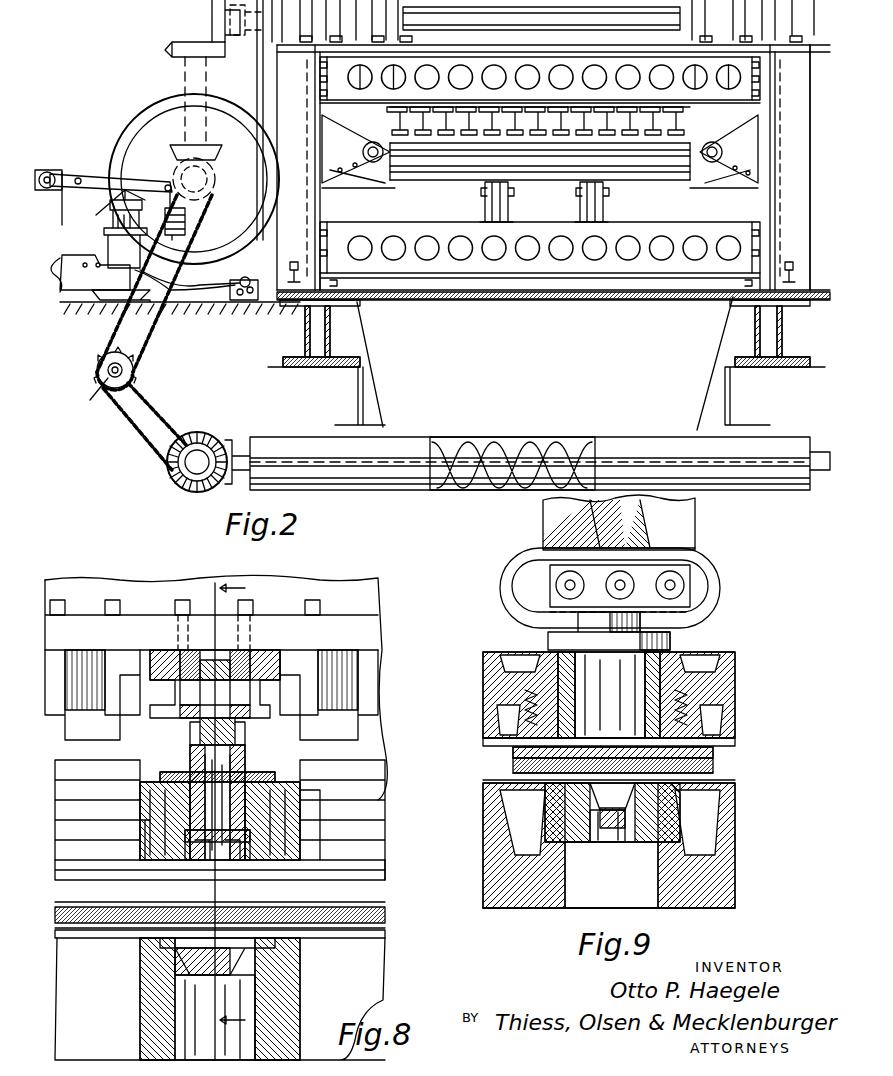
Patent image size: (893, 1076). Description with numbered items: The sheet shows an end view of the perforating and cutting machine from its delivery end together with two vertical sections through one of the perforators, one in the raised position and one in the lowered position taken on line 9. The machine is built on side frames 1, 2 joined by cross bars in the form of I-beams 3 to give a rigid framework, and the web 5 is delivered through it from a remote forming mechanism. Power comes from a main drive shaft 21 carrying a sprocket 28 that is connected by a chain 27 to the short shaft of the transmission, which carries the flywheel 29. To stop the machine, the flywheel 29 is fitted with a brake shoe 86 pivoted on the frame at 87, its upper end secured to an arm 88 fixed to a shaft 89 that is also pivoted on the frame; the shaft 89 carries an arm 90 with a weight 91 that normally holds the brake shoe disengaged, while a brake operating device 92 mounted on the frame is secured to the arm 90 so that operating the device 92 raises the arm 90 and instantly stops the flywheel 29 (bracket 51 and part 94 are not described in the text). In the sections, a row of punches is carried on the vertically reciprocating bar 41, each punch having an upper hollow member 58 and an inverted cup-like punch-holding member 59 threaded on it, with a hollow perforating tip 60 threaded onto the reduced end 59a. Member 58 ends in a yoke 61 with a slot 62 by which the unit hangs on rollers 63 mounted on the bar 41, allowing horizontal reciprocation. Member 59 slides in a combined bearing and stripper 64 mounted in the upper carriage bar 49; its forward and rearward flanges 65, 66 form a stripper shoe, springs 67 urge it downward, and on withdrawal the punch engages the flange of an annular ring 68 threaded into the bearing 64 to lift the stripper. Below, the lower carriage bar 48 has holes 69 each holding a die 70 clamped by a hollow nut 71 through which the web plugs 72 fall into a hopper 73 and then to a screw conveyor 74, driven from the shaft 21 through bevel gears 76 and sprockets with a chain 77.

In FIG. 2, the side frame 1 is at (290, 262).
In FIG. 2, the side frame 2 is at (800, 245).
In FIG. 2, the I-beam 3 is at (540, 262).
In FIG. 8, the web 5 is at (385, 907).
In FIG. 9, the web 5 is at (713, 764).
In FIG. 8, the section line 9 is at (236, 820).
In FIG. 2, the main drive shaft 21 is at (95, 393).
In FIG. 2, the chain 27 is at (105, 327).
In FIG. 2, the sprocket 28 is at (97, 364).
In FIG. 2, the flywheel 29 is at (118, 140).
In FIG. 8, the vertically reciprocating bar 41 is at (350, 608).
In FIG. 9, the vertically reciprocating bar 41 is at (685, 518).
In FIG. 8, the lower carriage bar 48 is at (360, 970).
In FIG. 9, the lower carriage bar 48 is at (530, 905).
In FIG. 8, the upper carriage bar 49 is at (365, 865).
In FIG. 9, the upper carriage bar 49 is at (493, 665).
In FIG. 2, the pivot bracket 51 is at (375, 162).
In FIG. 8, the upper hollow member 58 is at (240, 760).
In FIG. 8, the cup-like punch-holding member 59 is at (312, 808).
In FIG. 8, the reduced end 59a is at (295, 830).
In FIG. 8, the perforating tip 60 is at (235, 860).
In FIG. 8, the yoke 61 is at (200, 730).
In FIG. 9, the yoke 61 is at (718, 580).
In FIG. 9, the slot 62 is at (700, 572).
In FIG. 8, the rollers 63 is at (195, 697).
In FIG. 9, the rollers 63 is at (568, 578).
In FIG. 8, the combined bearing and stripper 64 is at (150, 830).
In FIG. 9, the forwardly extending flange 65 is at (690, 748).
In FIG. 9, the rearwardly extending flange 66 is at (510, 745).
In FIG. 9, the springs 67 is at (520, 710).
In FIG. 8, the annular ring 68 is at (262, 785).
In FIG. 9, the annular ring 68 is at (660, 640).
In FIG. 8, the holes 69 is at (215, 1040).
In FIG. 9, the holes 69 is at (560, 858).
In FIG. 8, the die 70 is at (170, 950).
In FIG. 9, the die 70 is at (585, 800).
In FIG. 8, the hollow nut 71 is at (165, 990).
In FIG. 9, the hollow nut 71 is at (590, 828).
In FIG. 9, the web plugs 72 is at (615, 830).
In FIG. 2, the hopper 73 is at (540, 418).
In FIG. 2, the screw conveyor 74 is at (458, 478).
In FIG. 2, the bevel gears 76 is at (215, 492).
In FIG. 2, the chain 77 is at (170, 410).
In FIG. 2, the brake shoe 86 is at (205, 300).
In FIG. 2, the pivot 87 is at (250, 300).
In FIG. 2, the arm 88 is at (65, 170).
In FIG. 2, the shaft 89 is at (47, 172).
In FIG. 2, the arm 90 is at (112, 183).
In FIG. 2, the weight 91 is at (185, 225).
In FIG. 2, the brake operating device 92 is at (112, 240).
In FIG. 2, the base bracket 94 is at (62, 280).